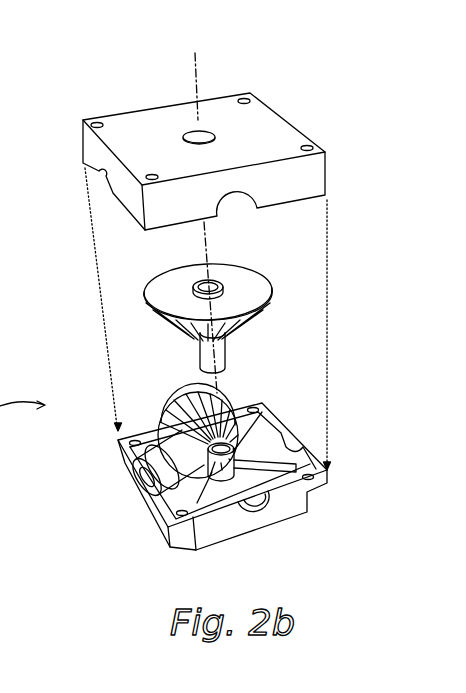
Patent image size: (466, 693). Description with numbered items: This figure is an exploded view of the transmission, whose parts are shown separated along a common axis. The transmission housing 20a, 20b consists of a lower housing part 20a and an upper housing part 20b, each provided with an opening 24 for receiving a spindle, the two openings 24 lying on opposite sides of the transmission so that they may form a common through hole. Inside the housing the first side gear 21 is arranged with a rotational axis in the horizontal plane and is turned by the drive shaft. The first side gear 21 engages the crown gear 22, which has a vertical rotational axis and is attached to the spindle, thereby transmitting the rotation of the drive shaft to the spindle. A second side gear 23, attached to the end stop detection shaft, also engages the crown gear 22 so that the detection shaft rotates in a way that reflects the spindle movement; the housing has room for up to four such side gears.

The transmission housing 20a is at (325, 487).
The transmission housing 20b is at (270, 125).
The first side gear 21 is at (182, 402).
The crown gear 22 is at (258, 282).
The second side gear 23 is at (133, 497).
The opening 24 is at (193, 136).